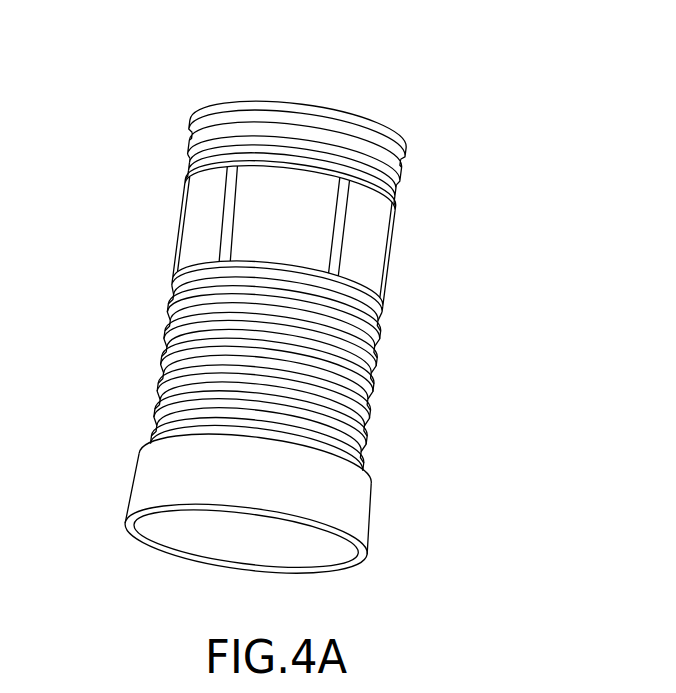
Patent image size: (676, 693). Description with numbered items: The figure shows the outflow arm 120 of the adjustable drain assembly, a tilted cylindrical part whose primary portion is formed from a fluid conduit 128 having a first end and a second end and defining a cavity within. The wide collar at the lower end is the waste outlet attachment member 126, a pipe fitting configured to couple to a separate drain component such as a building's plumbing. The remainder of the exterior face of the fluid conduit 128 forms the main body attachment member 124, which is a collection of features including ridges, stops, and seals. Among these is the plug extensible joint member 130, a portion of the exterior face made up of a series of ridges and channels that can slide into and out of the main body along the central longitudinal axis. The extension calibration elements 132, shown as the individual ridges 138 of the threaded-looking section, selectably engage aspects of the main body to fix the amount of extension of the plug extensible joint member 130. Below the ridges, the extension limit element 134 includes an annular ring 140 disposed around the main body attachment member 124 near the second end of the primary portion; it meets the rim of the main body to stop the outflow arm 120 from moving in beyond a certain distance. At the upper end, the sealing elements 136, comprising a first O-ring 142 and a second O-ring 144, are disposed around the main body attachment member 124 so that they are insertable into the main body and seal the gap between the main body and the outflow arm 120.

The outflow arm 120 is at (483, 79).
The main body attachment member 124 is at (560, 143).
The waste outlet attachment member 126 is at (104, 487).
The fluid conduit 128 is at (192, 242).
The plug extensible joint member 130 is at (124, 343).
The extension calibration elements 132 is at (465, 342).
The extension limit element 134 is at (310, 519).
The sealing elements 136 is at (500, 120).
The ridges 138 is at (376, 357).
The annular ring 140 is at (371, 473).
The first O-ring 142 is at (402, 146).
The second O-ring 144 is at (401, 167).